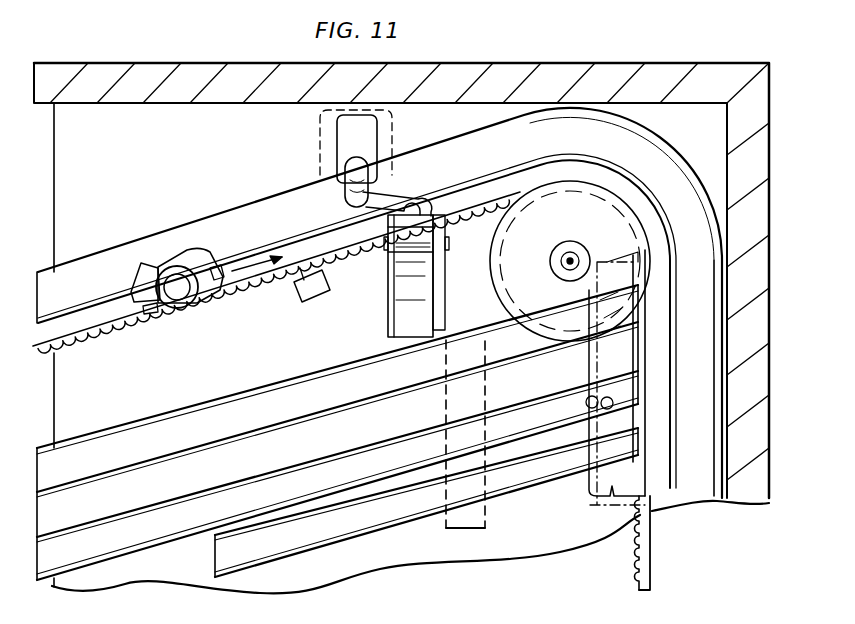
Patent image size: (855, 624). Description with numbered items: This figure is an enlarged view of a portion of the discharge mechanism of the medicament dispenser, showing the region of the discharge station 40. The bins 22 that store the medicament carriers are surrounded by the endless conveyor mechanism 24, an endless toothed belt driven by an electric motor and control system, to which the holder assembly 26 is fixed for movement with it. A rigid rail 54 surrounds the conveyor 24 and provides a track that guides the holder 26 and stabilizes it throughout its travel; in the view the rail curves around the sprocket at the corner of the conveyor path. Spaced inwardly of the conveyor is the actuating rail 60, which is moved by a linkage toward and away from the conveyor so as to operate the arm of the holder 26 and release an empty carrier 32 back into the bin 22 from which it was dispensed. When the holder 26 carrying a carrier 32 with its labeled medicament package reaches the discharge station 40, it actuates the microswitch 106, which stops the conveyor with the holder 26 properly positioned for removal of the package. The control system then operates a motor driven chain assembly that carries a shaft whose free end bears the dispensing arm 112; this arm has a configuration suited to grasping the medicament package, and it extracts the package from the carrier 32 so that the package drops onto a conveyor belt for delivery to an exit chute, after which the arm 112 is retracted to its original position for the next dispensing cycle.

The discharge station 40 is at (207, 206).
The holder assembly 26 is at (143, 277).
The carrier 32 is at (183, 302).
The microswitch 106 is at (306, 303).
The dispensing arm 112 is at (400, 193).
The bins 22 is at (383, 518).
The actuating rail 60 is at (588, 490).
The rail 54 is at (707, 460).
The endless conveyor mechanism 24 is at (650, 557).